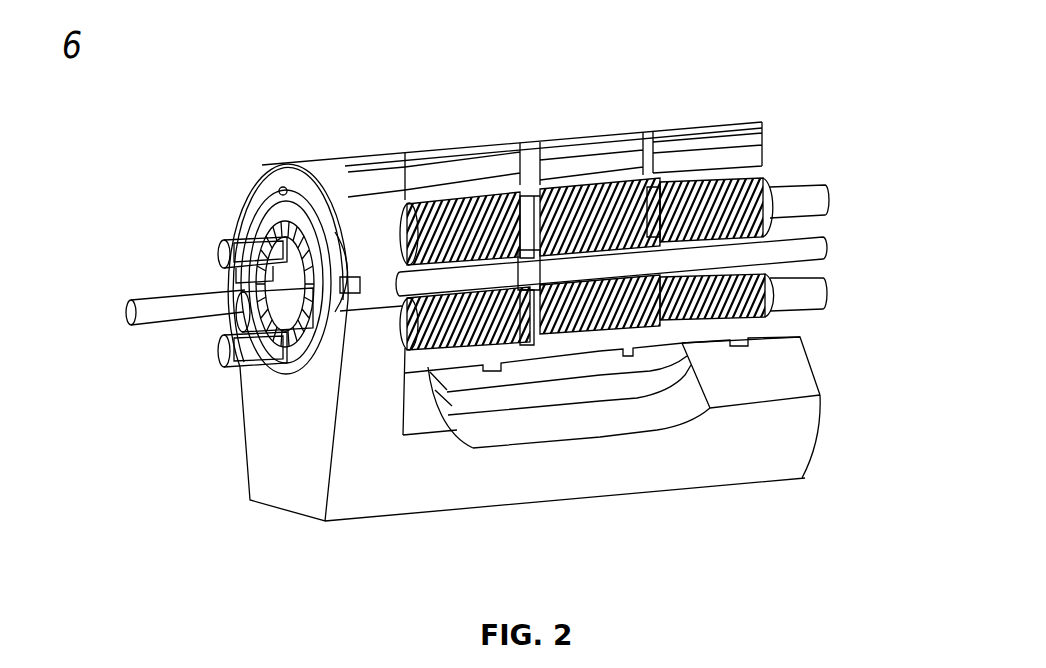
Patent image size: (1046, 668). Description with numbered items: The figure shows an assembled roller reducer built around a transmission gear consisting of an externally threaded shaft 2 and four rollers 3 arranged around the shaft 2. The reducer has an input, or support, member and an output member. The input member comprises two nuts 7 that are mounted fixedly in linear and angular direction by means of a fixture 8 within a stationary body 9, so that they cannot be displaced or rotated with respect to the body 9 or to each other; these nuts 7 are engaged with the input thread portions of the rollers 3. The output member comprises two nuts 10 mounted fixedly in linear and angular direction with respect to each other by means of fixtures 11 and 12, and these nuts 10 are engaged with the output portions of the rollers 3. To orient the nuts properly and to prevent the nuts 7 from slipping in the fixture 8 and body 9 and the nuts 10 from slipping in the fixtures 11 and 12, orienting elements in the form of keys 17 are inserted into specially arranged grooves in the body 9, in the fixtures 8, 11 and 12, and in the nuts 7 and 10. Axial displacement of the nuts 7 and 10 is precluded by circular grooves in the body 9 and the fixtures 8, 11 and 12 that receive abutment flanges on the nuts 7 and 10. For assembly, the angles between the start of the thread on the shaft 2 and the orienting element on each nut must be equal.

The externally threaded shaft 2 is at (181, 307).
The rollers 3 is at (808, 202).
The nuts 7 is at (296, 389).
The fixture 8 is at (327, 177).
The stationary body 9 is at (393, 472).
The nuts 10 is at (482, 355).
The fixture 11 is at (552, 373).
The fixture 12 is at (507, 153).
The keys 17 is at (455, 177).